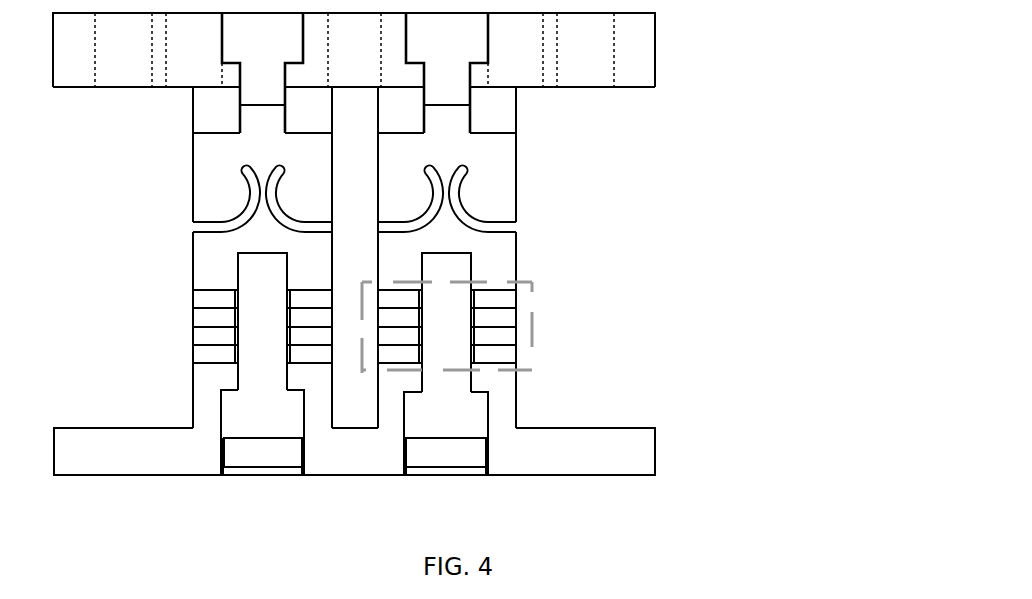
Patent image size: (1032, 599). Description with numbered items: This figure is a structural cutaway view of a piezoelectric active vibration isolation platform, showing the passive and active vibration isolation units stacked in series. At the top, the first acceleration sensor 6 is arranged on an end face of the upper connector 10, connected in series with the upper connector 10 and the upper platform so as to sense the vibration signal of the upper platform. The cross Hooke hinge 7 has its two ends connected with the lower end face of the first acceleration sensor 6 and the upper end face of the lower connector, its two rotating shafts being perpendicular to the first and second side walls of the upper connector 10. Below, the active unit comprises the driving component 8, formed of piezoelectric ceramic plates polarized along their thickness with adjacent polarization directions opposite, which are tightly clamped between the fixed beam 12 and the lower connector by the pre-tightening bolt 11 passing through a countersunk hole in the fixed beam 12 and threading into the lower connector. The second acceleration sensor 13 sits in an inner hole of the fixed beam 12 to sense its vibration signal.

The first acceleration sensor 6 is at (483, 102).
The upper connector 10 is at (472, 133).
The cross Hooke hinge 7 is at (492, 217).
The pre-tightening bolt 11 is at (445, 267).
The driving component 8 is at (535, 327).
The fixed beam 12 is at (520, 396).
The second acceleration sensor 13 is at (457, 453).